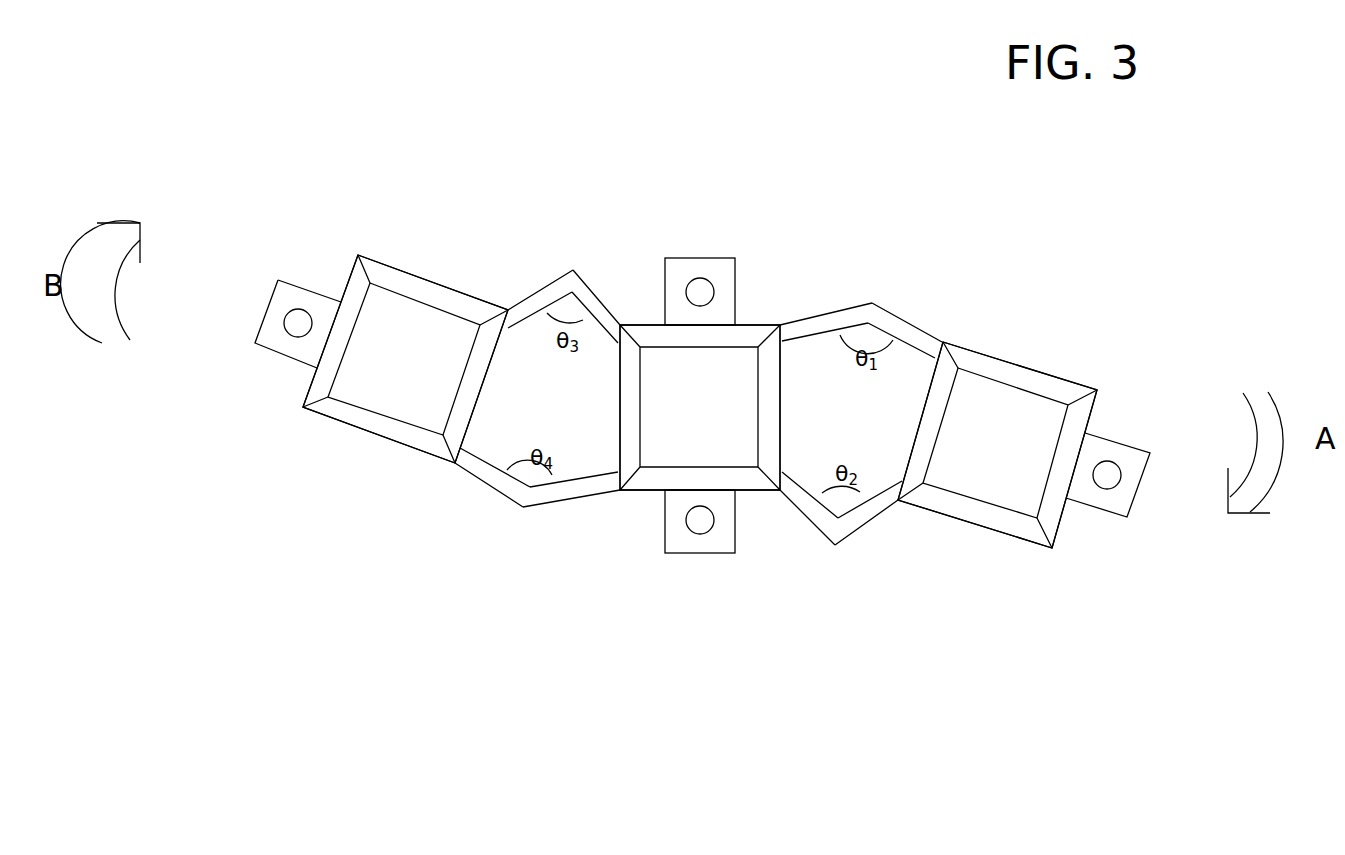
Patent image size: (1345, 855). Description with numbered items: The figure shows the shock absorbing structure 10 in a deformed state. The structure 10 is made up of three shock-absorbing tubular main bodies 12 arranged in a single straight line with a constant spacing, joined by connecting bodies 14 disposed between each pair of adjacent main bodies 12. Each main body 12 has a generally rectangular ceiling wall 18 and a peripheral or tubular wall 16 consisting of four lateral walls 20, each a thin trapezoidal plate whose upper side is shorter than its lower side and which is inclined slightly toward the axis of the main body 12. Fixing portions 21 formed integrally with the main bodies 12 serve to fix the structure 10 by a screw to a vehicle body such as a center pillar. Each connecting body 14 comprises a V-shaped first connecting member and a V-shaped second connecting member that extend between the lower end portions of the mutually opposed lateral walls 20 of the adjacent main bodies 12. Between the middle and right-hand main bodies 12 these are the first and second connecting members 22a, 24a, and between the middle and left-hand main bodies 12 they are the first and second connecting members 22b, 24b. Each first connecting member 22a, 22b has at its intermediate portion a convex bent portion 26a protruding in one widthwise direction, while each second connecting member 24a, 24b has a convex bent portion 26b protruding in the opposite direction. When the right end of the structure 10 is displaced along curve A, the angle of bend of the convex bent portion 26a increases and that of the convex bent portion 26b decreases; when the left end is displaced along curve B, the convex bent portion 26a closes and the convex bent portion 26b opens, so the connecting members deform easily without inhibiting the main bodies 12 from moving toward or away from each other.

The shock absorbing structure 10 is at (342, 240).
The shock-absorbing tubular main body 12 is at (400, 252).
The connecting body 14 is at (727, 403).
The peripheral or tubular wall 16 is at (360, 440).
The ceiling wall 18 is at (408, 407).
The lateral wall 20 is at (447, 298).
The fixing portion 21 is at (278, 292).
The first connecting member 22a is at (823, 323).
The first connecting member 22b is at (533, 305).
The second connecting member 24a is at (852, 523).
The second connecting member 24b is at (565, 492).
The convex bent portion 26a is at (583, 267).
The convex bent portion 26b is at (523, 497).